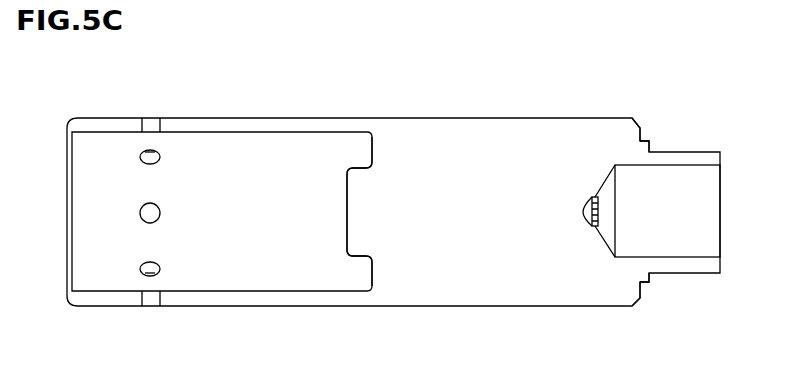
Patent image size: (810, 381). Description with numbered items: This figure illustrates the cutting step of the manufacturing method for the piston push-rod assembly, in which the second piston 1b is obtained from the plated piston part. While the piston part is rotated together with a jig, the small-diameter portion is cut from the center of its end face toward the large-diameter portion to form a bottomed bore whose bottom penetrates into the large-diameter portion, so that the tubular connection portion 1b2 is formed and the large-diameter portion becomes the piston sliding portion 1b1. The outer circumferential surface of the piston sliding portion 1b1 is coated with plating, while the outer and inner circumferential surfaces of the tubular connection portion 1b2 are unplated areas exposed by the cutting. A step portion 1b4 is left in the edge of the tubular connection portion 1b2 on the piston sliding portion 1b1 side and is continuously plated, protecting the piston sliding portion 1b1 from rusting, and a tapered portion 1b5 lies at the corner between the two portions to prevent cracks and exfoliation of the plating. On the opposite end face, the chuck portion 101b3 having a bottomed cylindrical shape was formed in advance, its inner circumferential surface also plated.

The second piston 1b is at (462, 106).
The piston sliding portion 1b1 is at (545, 143).
The tubular connection portion 1b2 is at (690, 158).
The step portion 1b4 is at (646, 140).
The inclined portion 1b5 is at (637, 125).
The chuck portion 101b3 is at (272, 290).